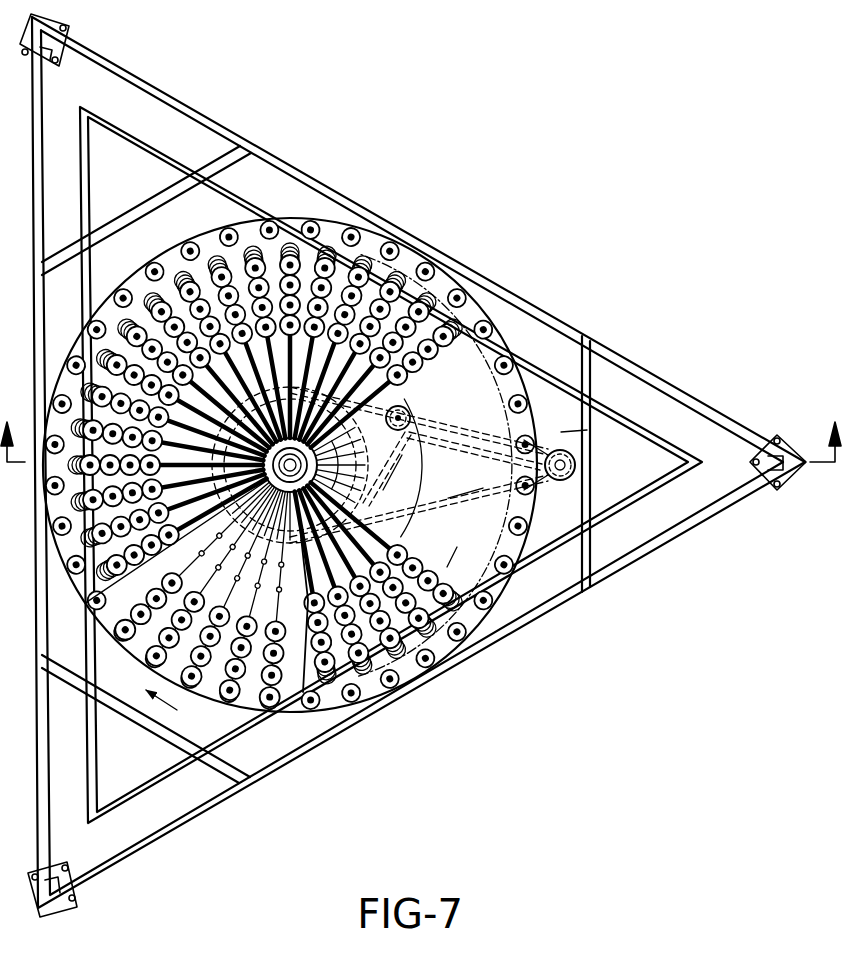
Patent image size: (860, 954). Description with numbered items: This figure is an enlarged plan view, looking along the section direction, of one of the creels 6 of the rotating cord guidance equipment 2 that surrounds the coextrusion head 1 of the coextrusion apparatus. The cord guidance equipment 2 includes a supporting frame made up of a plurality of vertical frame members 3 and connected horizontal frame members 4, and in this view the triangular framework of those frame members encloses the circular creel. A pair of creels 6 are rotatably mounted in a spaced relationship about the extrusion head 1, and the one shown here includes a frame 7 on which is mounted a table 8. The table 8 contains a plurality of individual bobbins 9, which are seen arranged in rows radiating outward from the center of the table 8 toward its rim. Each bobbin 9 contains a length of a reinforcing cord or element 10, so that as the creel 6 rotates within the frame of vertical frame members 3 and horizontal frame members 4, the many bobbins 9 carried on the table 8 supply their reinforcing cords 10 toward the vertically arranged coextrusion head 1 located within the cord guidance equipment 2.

The coextrusion head 1 is at (420, 428).
The rotating cord guidance equipment 2 is at (539, 642).
The vertical frame member 3 is at (68, 54).
The horizontal frame member 4 is at (273, 158).
The creel 6 is at (484, 348).
The frame 7 is at (629, 354).
The table 8 is at (414, 285).
The bobbin 9 is at (318, 216).
The reinforcing cord 10 is at (282, 708).